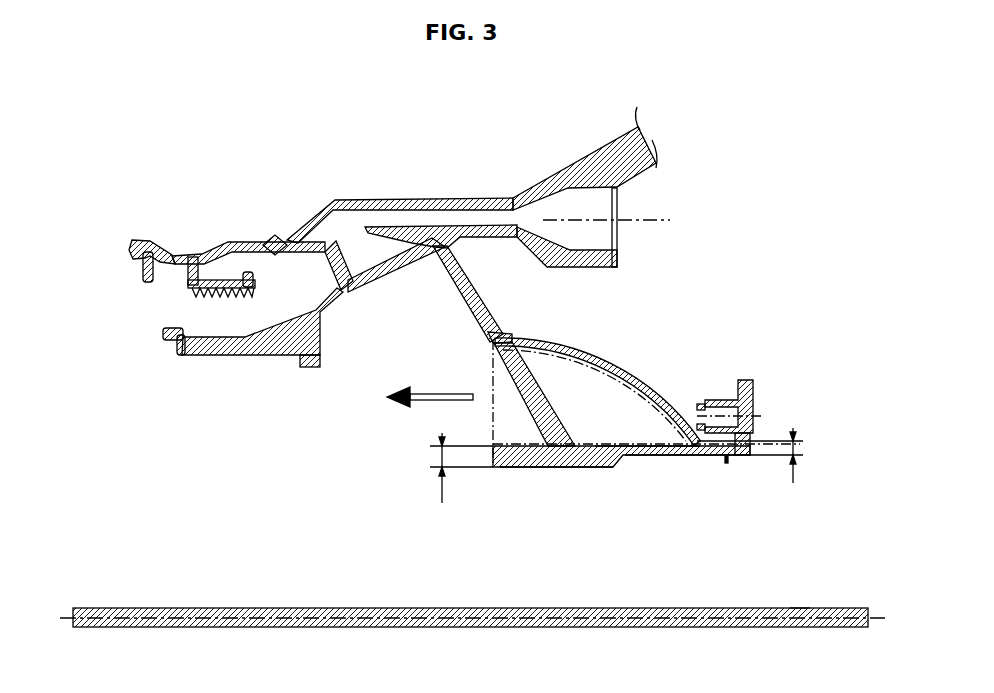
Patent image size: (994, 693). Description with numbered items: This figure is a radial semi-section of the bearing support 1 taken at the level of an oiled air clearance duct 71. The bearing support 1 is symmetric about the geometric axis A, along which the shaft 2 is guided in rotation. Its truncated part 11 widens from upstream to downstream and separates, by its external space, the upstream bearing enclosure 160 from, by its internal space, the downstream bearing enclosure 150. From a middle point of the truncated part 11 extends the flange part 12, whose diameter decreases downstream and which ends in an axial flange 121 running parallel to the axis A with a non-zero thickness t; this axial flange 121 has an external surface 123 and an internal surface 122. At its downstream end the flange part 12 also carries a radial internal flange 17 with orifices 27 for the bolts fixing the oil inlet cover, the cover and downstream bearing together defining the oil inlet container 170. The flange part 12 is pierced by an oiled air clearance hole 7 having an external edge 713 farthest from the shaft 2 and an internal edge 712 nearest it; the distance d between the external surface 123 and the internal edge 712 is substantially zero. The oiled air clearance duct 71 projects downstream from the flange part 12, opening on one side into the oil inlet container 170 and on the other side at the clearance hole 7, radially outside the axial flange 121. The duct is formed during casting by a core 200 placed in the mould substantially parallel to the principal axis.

The bearing support 1 is at (333, 145).
The truncated part 11 is at (577, 164).
The flange part 12 is at (470, 297).
The downstream bearing enclosure 150 is at (427, 338).
The upstream bearing enclosure 160 is at (307, 288).
The cores 200 is at (605, 410).
The oil inlet container 170 is at (670, 493).
The axial flange 121 is at (522, 460).
The internal surface 122 is at (578, 468).
The external surface 123 is at (607, 446).
The oiled air clearance duct 71 is at (613, 364).
The internal edge 712 is at (523, 447).
The external edge 713 is at (500, 331).
The orifices 27 is at (760, 406).
The radial internal flange 17 is at (755, 437).
The oiled air clearance hole 7 is at (460, 422).
The thickness t is at (444, 468).
The distance d is at (752, 455).
The shaft 2 is at (331, 628).
The geometric axis A is at (800, 608).